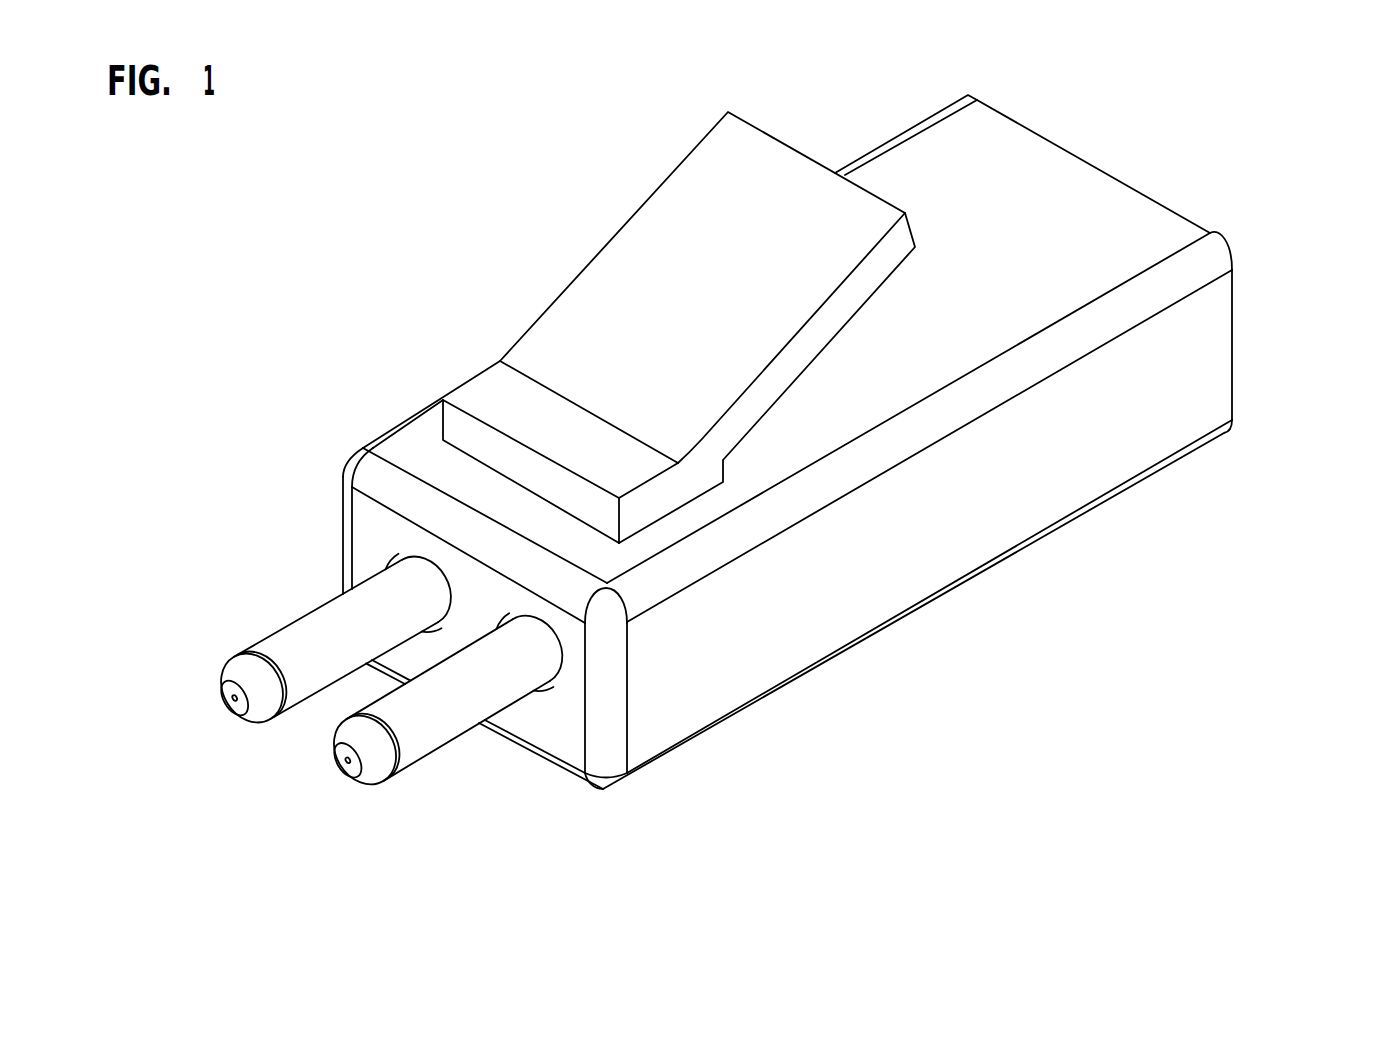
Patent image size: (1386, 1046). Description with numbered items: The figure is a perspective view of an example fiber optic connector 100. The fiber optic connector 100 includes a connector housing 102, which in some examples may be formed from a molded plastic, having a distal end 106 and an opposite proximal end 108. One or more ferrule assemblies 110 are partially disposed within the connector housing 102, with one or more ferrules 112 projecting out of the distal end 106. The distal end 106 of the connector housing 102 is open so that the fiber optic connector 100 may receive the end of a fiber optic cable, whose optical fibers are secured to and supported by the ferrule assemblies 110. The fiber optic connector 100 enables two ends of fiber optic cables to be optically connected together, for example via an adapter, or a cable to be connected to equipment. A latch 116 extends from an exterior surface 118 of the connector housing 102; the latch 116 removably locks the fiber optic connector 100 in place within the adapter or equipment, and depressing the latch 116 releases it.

The fiber optic connector 100 is at (380, 192).
The connector housing 102 is at (922, 565).
The distal end 106 is at (607, 777).
The proximal end 108 is at (1233, 345).
The ferrule assemblies 110 is at (442, 753).
The ferrules 112 is at (222, 686).
The latch 116 is at (617, 237).
The exterior surface 118 is at (925, 173).